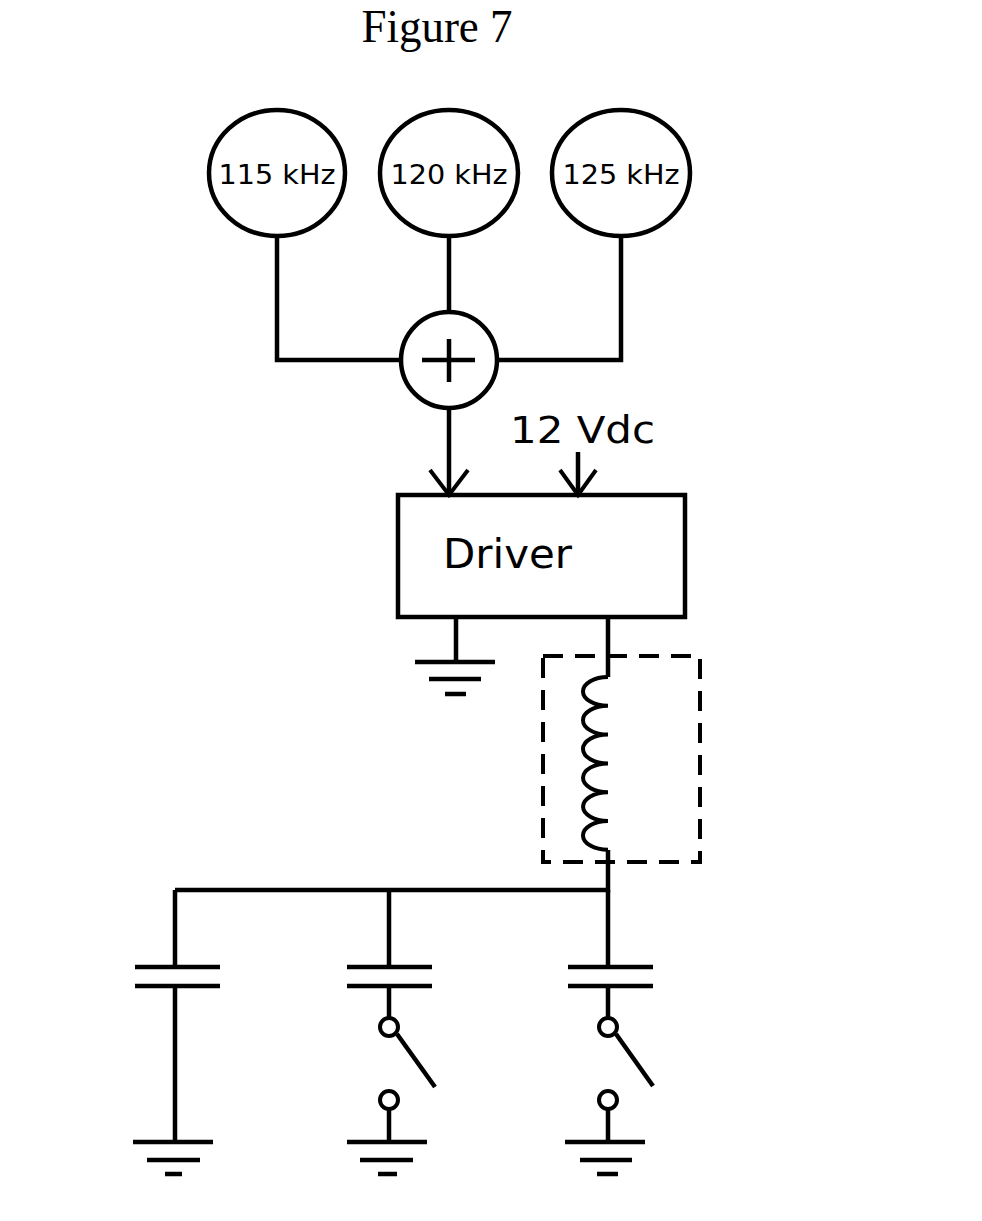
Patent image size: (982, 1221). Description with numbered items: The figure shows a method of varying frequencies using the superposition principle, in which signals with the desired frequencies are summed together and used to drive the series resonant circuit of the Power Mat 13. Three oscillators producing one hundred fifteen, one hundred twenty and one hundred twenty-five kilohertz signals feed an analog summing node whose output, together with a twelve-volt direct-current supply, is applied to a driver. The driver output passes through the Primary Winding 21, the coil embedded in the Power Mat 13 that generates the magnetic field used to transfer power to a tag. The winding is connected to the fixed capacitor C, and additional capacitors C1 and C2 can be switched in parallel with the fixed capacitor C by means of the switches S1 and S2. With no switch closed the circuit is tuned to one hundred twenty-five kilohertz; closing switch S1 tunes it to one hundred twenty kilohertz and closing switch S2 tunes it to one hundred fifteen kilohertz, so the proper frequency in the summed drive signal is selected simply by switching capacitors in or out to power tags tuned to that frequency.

The Power Mat 13 is at (649, 759).
The Primary Winding 21 is at (625, 763).
The fixed capacitor C is at (156, 1032).
The additional capacitor C1 is at (359, 953).
The additional capacitor C2 is at (580, 953).
The switch S1 is at (374, 1096).
The switch S2 is at (592, 1096).